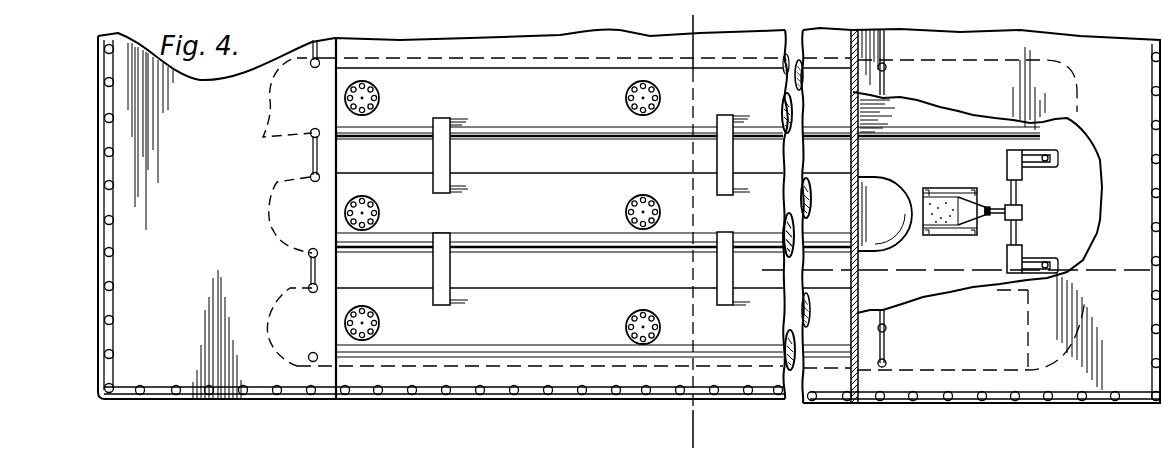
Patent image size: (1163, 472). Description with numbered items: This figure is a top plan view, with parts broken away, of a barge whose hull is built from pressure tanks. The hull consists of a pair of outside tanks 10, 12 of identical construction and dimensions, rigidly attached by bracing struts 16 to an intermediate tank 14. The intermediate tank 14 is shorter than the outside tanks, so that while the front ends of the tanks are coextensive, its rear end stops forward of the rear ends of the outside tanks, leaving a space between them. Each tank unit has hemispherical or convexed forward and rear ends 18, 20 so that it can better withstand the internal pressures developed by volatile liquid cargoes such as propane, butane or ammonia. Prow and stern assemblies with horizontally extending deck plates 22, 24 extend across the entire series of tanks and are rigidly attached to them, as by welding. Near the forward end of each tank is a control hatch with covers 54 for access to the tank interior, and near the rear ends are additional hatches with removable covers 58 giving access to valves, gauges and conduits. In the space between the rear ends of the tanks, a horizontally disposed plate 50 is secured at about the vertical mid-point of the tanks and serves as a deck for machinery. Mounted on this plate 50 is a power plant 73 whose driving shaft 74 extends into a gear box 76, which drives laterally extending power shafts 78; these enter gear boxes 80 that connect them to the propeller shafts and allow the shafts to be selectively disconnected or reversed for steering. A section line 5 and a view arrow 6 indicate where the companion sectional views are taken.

The section line 5- 5 is at (718, 28).
The break line section indicator 6 is at (790, 265).
The outside tank 10 is at (503, 78).
The outside tank 12 is at (503, 302).
The intermediate tank 14 is at (513, 185).
The bracing struts 16 is at (443, 154).
The forward end 18 is at (278, 182).
The rear end 20 is at (883, 190).
The deck plate 22 is at (977, 218).
The deck plate 24 is at (184, 220).
The horizontally disposed plate 50 is at (992, 209).
The covers 54 is at (367, 98).
The removable covers 58 is at (627, 97).
The power plant 73 is at (950, 200).
The driving shaft 74 is at (1000, 206).
The gear box 76 is at (1022, 212).
The power shafts 78 is at (1017, 190).
The gear boxes 80 is at (1007, 153).